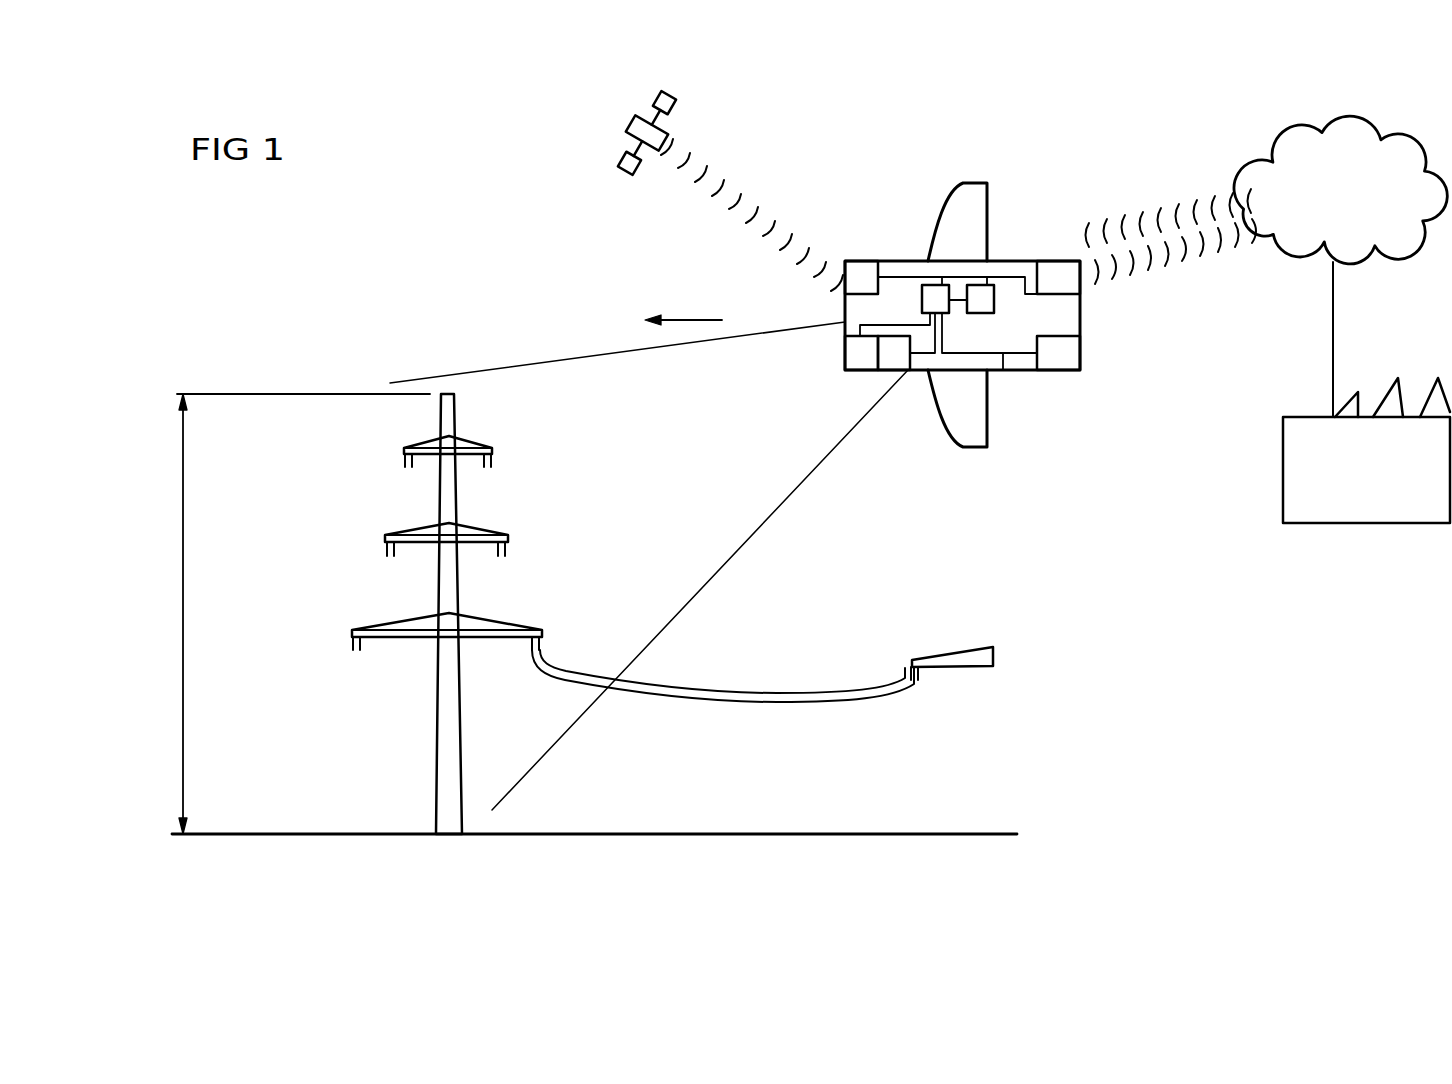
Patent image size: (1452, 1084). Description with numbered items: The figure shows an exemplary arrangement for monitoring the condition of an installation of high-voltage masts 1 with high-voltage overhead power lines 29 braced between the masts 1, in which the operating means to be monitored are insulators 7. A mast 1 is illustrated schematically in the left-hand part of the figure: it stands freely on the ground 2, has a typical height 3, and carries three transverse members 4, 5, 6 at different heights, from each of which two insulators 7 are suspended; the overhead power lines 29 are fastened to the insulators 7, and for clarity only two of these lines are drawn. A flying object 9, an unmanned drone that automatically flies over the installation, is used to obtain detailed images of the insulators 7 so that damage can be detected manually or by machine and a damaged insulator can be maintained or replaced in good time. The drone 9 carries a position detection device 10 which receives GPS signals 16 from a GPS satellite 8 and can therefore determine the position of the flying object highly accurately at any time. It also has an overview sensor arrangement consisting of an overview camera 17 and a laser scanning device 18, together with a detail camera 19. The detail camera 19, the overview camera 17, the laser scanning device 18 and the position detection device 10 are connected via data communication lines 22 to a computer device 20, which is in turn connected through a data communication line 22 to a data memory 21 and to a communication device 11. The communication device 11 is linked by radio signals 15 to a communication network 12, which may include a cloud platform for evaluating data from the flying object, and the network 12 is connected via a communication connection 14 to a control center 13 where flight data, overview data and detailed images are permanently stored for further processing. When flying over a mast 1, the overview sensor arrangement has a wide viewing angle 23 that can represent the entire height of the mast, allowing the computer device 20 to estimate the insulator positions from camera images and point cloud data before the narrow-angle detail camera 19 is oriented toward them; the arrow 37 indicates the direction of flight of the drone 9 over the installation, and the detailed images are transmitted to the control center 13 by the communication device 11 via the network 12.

The high-voltage mast 1 is at (436, 747).
The ground 2 is at (291, 834).
The height 3 is at (183, 584).
The transverse member 4 is at (478, 443).
The transverse member 5 is at (478, 529).
The transverse member 6 is at (478, 619).
The insulator 7 is at (405, 466).
The GPS satellite 8 is at (628, 122).
The flying object 9 is at (964, 296).
The position detection device 10 is at (853, 259).
The communication device 11 is at (1047, 265).
The communication network 12 is at (1285, 250).
The control center 13 is at (1283, 467).
The communication connection 14 is at (1333, 357).
The radio signals 15 is at (1160, 207).
The GPS signals 16 is at (730, 190).
The overview camera 17 is at (852, 352).
The laser scanning device 18 is at (886, 362).
The detail camera 19 is at (1055, 362).
The computer device 20 is at (928, 292).
The data memory 21 is at (987, 292).
The data communication line 22 is at (908, 277).
The viewing angle 23 is at (572, 358).
The high-voltage overhead power line 29 is at (760, 690).
The flight direction 37 is at (683, 312).